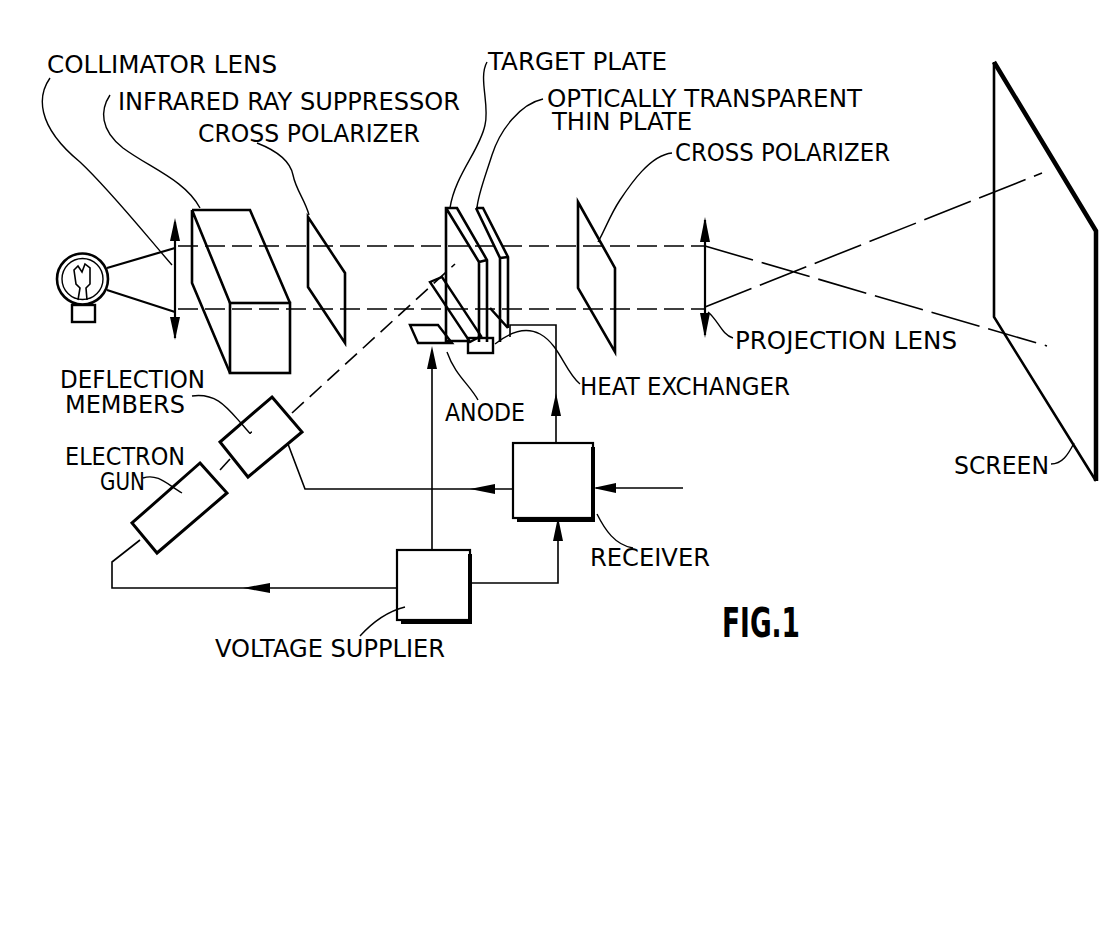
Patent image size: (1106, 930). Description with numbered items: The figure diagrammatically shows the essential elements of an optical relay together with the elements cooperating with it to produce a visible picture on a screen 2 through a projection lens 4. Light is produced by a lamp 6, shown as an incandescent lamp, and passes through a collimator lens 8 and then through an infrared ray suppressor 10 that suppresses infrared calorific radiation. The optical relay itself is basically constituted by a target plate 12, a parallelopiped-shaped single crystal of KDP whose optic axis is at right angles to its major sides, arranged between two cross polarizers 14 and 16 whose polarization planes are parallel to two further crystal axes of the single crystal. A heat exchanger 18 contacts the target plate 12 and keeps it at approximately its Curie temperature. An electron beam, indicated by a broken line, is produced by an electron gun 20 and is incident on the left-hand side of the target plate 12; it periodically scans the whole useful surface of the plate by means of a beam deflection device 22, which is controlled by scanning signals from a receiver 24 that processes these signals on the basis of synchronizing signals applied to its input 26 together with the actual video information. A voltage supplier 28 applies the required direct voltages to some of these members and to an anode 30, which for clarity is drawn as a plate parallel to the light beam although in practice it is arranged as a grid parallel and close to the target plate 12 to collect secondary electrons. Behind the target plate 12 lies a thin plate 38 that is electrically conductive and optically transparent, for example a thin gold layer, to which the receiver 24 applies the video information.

The screen 2 is at (1004, 153).
The projection lens 4 is at (707, 228).
The lamp 6 is at (90, 256).
The collimator lens 8 is at (173, 232).
The infrared ray suppressor 10 is at (228, 208).
The target plate 12 is at (443, 223).
The cross polarizer 14 is at (322, 214).
The cross polarizer 16 is at (586, 210).
The heat exchanger 18 is at (515, 347).
The electron gun 20 is at (173, 522).
The beam deflection device 22 is at (283, 436).
The receiver 24 is at (551, 422).
The input 26 is at (627, 482).
The voltage supplier 28 is at (480, 484).
The anode 30 is at (420, 348).
The thin plate 38 is at (478, 212).